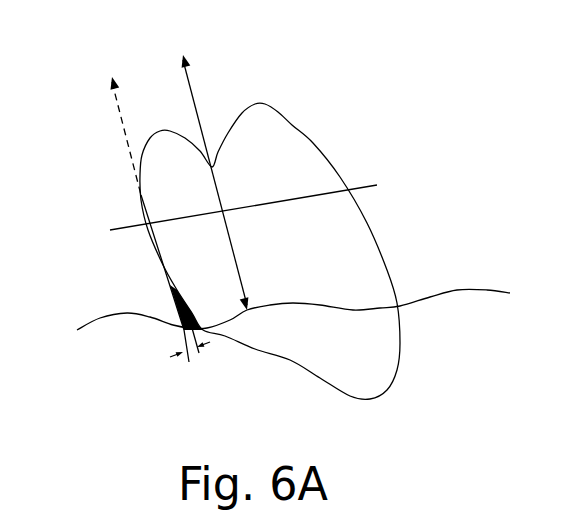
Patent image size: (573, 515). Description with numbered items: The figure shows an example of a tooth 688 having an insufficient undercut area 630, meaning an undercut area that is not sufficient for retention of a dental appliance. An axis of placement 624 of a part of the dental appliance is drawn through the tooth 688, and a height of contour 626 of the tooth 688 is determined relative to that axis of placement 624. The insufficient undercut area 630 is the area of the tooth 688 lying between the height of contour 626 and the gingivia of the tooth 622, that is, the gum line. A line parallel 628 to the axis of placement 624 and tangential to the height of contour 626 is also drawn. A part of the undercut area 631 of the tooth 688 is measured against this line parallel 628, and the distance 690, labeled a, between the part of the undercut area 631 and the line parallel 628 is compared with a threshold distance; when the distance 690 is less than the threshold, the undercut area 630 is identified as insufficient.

The gingivia of the tooth 622 is at (458, 282).
The axis of placement 624 is at (194, 95).
The height of contour 626 is at (361, 176).
The line parallel to an axis of placement 628 is at (129, 157).
The insufficient undercut area 630 is at (168, 282).
The part of an undercut area 631 is at (201, 333).
The tooth 688 is at (84, 48).
The distance 690 is at (186, 366).